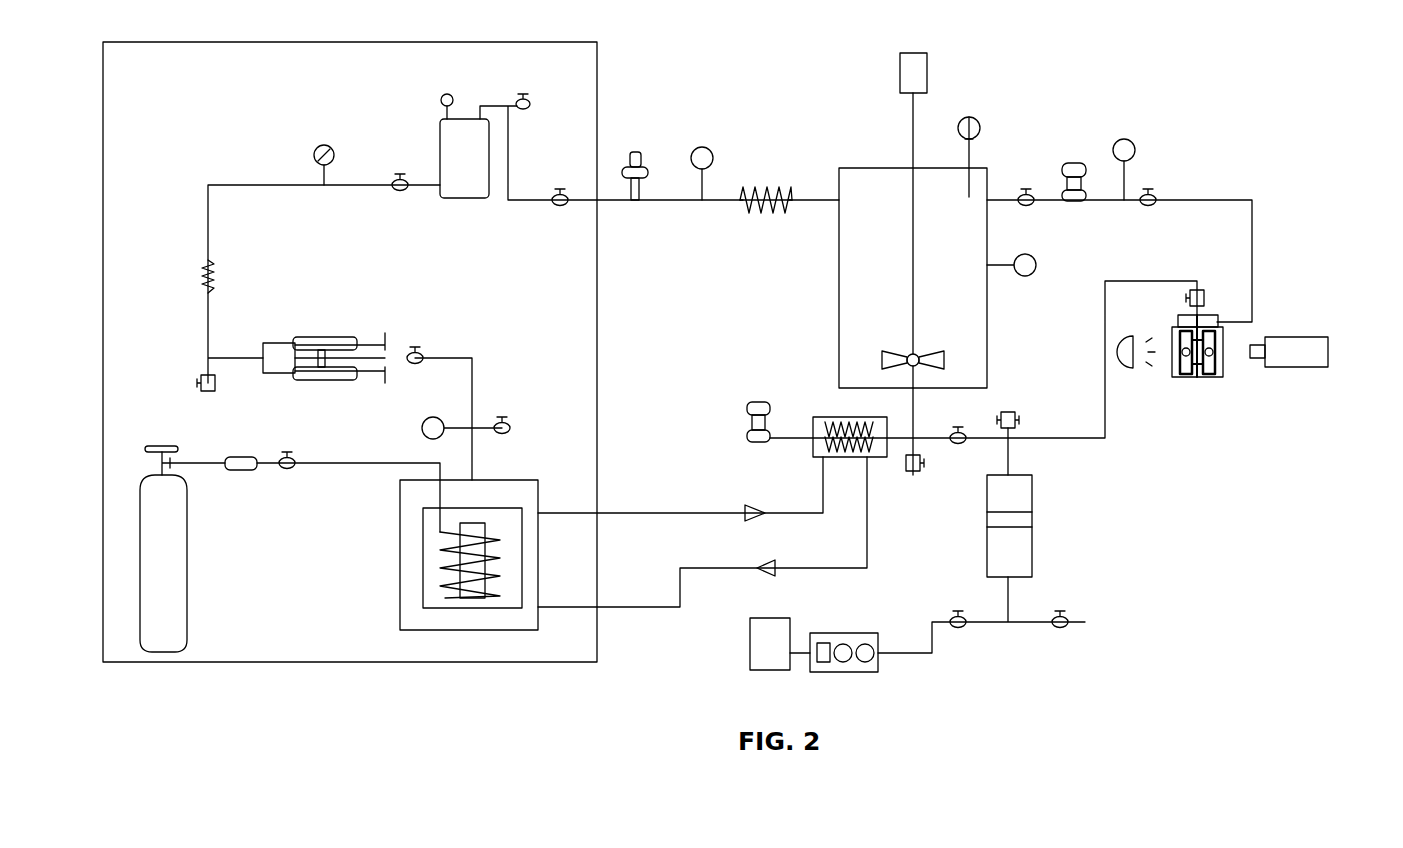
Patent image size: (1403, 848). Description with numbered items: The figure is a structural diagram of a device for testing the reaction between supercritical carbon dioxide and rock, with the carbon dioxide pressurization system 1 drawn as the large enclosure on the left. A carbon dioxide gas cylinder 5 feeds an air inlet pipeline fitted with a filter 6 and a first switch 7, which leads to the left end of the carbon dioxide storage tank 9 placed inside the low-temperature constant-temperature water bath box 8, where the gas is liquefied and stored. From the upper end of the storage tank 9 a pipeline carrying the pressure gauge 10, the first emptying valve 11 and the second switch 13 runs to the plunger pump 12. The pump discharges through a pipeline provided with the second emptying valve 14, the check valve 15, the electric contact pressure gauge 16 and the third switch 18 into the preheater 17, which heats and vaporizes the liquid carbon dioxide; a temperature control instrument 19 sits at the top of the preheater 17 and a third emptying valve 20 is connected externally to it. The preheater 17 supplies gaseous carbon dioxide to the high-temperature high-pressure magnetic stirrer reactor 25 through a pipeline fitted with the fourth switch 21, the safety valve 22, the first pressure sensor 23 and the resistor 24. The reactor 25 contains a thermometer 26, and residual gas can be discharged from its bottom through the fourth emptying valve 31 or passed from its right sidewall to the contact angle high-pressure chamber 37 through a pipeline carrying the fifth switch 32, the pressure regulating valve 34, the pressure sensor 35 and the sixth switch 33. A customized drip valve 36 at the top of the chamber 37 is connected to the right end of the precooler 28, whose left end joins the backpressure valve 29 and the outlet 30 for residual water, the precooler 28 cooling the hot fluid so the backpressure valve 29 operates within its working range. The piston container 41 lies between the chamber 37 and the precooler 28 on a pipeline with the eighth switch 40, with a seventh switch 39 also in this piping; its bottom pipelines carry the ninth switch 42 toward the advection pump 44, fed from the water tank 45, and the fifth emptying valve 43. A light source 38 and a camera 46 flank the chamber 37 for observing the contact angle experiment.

The carbon dioxide pressurization system 1 is at (410, 662).
The carbon dioxide gas cylinder 5 is at (150, 470).
The filter 6 is at (345, 547).
The first switch 7 is at (368, 503).
The low-temperature constant-temperature water bath box 8 is at (370, 629).
The carbon dioxide storage tank 9 is at (517, 630).
The pressure gauge 10 is at (400, 452).
The first emptying valve 11 is at (565, 380).
The plunger pump 12 is at (385, 305).
The second switch 13 is at (480, 305).
The second emptying valve 14 is at (183, 315).
The check valve 15 is at (185, 200).
The electric contact pressure gauge 16 is at (275, 85).
The preheater 17 is at (535, 62).
The third switch 18 is at (515, 250).
The temperature control instrument 19 is at (422, 32).
The third emptying valve 20 is at (596, 33).
The fourth switch 21 is at (645, 275).
The safety valve 22 is at (718, 246).
The first pressure sensor 23 is at (765, 112).
The resistor 24 is at (855, 155).
The high-temperature high-pressure magnetic stirrer reactor 25 is at (790, 271).
The thermometer 26 is at (1040, 78).
The precooler 28 is at (795, 327).
The backpressure valve 29 is at (717, 345).
The outlet 30 is at (700, 394).
The fourth emptying valve 31 is at (980, 510).
The fifth switch 32 is at (1085, 233).
The sixth switch 33 is at (1237, 179).
The pressure regulating valve 34 is at (1165, 246).
The pressure sensor 35 is at (1118, 108).
The drip valve 36 is at (1340, 247).
The contact angle high-pressure chamber 37 is at (1105, 307).
The light source 38 is at (1200, 432).
The seventh switch 39 is at (1105, 372).
The eighth switch 40 is at (1013, 378).
The piston container 41 is at (1120, 475).
The ninth switch 42 is at (1068, 655).
The fifth emptying valve 43 is at (1150, 567).
The advection pump 44 is at (985, 697).
The water tank 45 is at (725, 712).
The camera 46 is at (1400, 292).